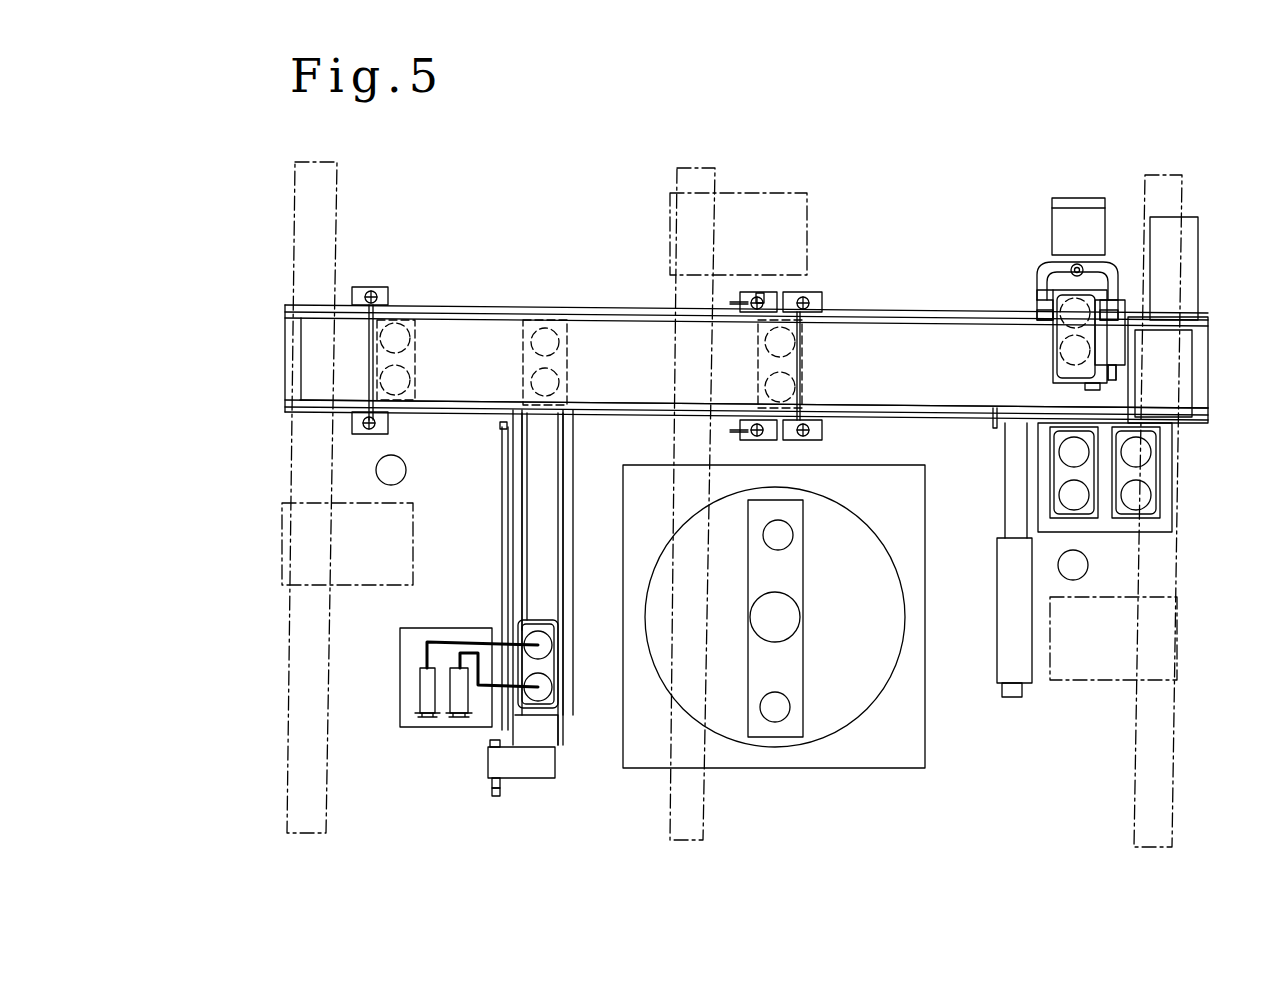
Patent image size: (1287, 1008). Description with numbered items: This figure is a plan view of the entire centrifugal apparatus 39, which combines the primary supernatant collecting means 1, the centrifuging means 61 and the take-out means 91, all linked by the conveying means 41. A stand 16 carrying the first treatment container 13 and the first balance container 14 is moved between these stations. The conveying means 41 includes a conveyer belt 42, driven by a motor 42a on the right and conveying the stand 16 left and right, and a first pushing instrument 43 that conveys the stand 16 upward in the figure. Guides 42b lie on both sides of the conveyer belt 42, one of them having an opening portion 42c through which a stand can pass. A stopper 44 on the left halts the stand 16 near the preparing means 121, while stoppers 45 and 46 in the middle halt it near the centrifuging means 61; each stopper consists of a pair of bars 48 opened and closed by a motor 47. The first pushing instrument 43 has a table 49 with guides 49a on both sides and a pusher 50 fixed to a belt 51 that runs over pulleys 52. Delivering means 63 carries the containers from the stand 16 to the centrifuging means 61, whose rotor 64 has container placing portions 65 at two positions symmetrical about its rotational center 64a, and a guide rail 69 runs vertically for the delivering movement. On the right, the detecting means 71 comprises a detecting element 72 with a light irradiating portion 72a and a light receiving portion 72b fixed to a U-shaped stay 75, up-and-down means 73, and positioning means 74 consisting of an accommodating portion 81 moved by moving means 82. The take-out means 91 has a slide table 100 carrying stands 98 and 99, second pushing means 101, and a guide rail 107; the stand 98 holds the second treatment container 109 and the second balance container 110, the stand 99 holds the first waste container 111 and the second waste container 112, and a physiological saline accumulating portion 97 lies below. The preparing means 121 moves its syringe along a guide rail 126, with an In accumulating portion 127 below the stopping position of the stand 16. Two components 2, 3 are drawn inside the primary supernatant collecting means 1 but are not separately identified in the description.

The primary supernatant collecting means 1 is at (428, 745).
The cylinder 2 is at (422, 693).
The cylinder 3 is at (458, 690).
The first treatment container 13 is at (548, 645).
The first balance container 14 is at (548, 687).
The stand 16 is at (543, 620).
The centrifugal apparatus 39 is at (452, 188).
The conveying means 41 is at (486, 292).
The conveyer belt 42 is at (915, 320).
The motor 42a is at (1195, 245).
The guides 42b is at (963, 310).
The opening portion 42c is at (1003, 408).
The first pushing instrument 43 is at (573, 498).
The stopper 44 is at (370, 287).
The stopper 45 is at (762, 292).
The stopper 46 is at (822, 303).
The motor 47 is at (388, 297).
The bars 48 is at (377, 325).
The table 49 is at (550, 480).
The guides 49a is at (560, 575).
The pusher 50 is at (540, 758).
The belt 51 is at (503, 553).
The pulleys 52 is at (500, 427).
The centrifuging means 61 is at (763, 770).
The delivering means 63 is at (727, 193).
The rotor 64 is at (795, 578).
The rotational center 64a is at (790, 620).
The container placing portions 65 is at (782, 535).
The guide rail 69 is at (682, 830).
The detecting means 71 is at (1068, 185).
The detecting element 72 is at (1040, 300).
The light irradiating portion 72a is at (1040, 323).
The light receiving portion 72b is at (1115, 312).
The up-and-down means 73 is at (1052, 222).
The positioning means 74 is at (1118, 345).
The U-shaped stay 75 is at (1105, 270).
The accommodating portion 81 is at (1085, 385).
The moving means 82 is at (1120, 363).
The take-out means 91 is at (1232, 631).
The physiological saline accumulating portion 97 is at (1073, 580).
The stand 98 is at (1075, 518).
The stand 99 is at (1160, 470).
The slide table 100 is at (1160, 535).
The second pushing means 101 is at (1008, 698).
The guide rail 107 is at (1162, 752).
The second treatment container 109 is at (1068, 452).
The second balance container 110 is at (1068, 495).
The first waste container 111 is at (1140, 452).
The second waste container 112 is at (1140, 500).
The preparing means 121 is at (270, 522).
The guide rail 126 is at (298, 700).
The In accumulating portion 127 is at (406, 472).